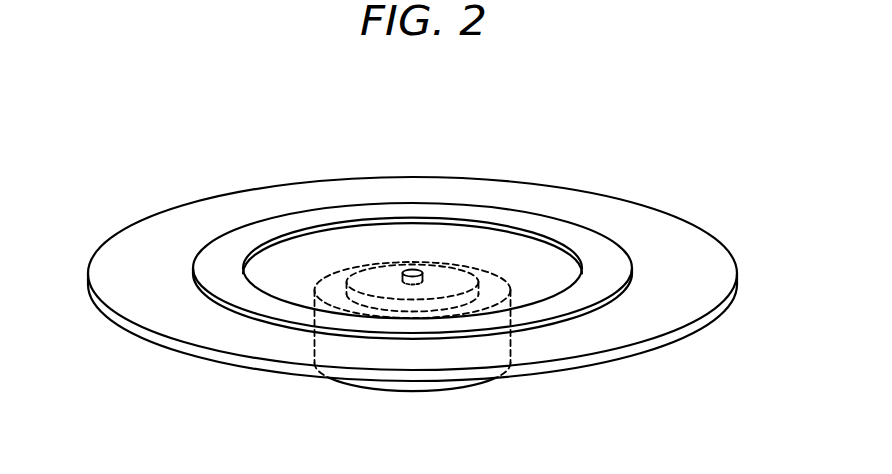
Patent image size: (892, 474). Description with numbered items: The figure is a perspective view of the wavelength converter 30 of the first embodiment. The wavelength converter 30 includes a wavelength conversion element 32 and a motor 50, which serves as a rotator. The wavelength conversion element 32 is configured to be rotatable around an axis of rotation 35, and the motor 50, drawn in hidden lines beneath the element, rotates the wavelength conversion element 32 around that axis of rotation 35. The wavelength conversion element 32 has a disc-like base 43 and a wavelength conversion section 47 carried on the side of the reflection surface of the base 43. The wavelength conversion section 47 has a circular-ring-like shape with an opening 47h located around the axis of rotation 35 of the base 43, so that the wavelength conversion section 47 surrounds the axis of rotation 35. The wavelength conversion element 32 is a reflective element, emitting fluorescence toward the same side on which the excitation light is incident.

The wavelength converter 30 is at (511, 153).
The wavelength conversion element 32 is at (575, 166).
The base 43 is at (657, 223).
The wavelength conversion section 47 is at (255, 236).
The opening 47h is at (334, 240).
The axis of rotation 35 is at (413, 270).
The motor 50 is at (390, 385).